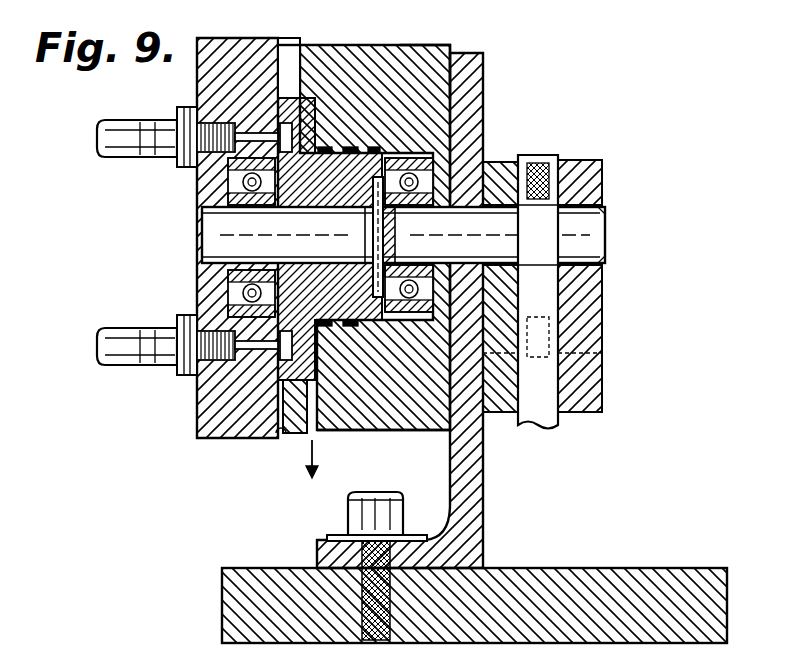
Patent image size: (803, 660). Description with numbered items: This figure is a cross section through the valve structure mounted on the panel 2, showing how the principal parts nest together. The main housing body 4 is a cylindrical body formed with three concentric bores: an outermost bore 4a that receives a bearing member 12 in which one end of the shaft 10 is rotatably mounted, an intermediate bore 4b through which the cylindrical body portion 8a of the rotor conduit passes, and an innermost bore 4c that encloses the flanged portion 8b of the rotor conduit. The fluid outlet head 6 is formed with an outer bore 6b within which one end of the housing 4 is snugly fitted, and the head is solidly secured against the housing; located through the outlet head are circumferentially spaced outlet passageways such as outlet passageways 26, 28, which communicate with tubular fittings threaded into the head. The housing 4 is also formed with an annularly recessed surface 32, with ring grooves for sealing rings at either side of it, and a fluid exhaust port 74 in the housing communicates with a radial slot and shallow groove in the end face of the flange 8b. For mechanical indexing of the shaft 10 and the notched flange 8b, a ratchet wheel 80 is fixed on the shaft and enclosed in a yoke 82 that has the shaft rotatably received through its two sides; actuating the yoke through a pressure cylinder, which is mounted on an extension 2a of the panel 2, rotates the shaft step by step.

The panel 2 is at (480, 56).
The extension of the panel 2a is at (567, 575).
The housing body 4 is at (403, 60).
The outermost bore 4a is at (452, 130).
The intermediate bore 4b is at (437, 48).
The innermost bore 4c is at (323, 147).
The fluid outlet head 6 is at (218, 40).
The outer bore 6b is at (275, 437).
The cylindrical body portion 8a is at (362, 165).
The flanged portion 8b is at (297, 110).
The shaft 10 is at (483, 220).
The bearing member 12 is at (410, 430).
The outlet passageway 26 is at (250, 135).
The outlet passageway 28 is at (257, 347).
The annularly recessed surface 32 is at (343, 432).
The fluid exhaust port 74 is at (300, 437).
The ratchet wheel 80 is at (540, 157).
The yoke 82 is at (590, 160).